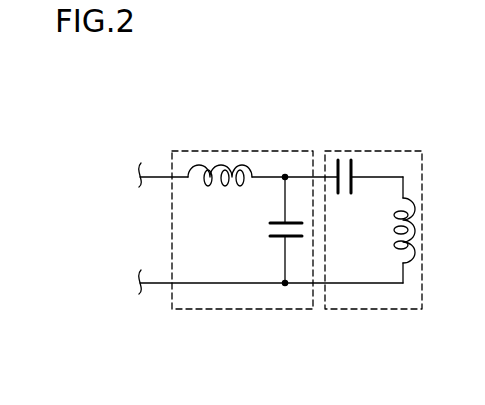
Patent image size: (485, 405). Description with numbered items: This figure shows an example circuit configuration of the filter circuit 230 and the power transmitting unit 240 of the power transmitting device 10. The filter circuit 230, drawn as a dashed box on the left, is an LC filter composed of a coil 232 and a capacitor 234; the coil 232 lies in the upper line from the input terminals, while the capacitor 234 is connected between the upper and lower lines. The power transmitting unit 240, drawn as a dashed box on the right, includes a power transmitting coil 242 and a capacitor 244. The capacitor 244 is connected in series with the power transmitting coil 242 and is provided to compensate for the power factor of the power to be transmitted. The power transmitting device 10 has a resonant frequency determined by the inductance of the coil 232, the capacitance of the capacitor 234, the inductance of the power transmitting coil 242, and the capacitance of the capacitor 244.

The power transmitting device 10 is at (313, 58).
The filter circuit 230 is at (293, 151).
The coil 232 is at (212, 162).
The capacitor 234 is at (278, 239).
The power transmitting unit 240 is at (398, 151).
The power transmitting coil 242 is at (401, 246).
The capacitor 244 is at (353, 163).